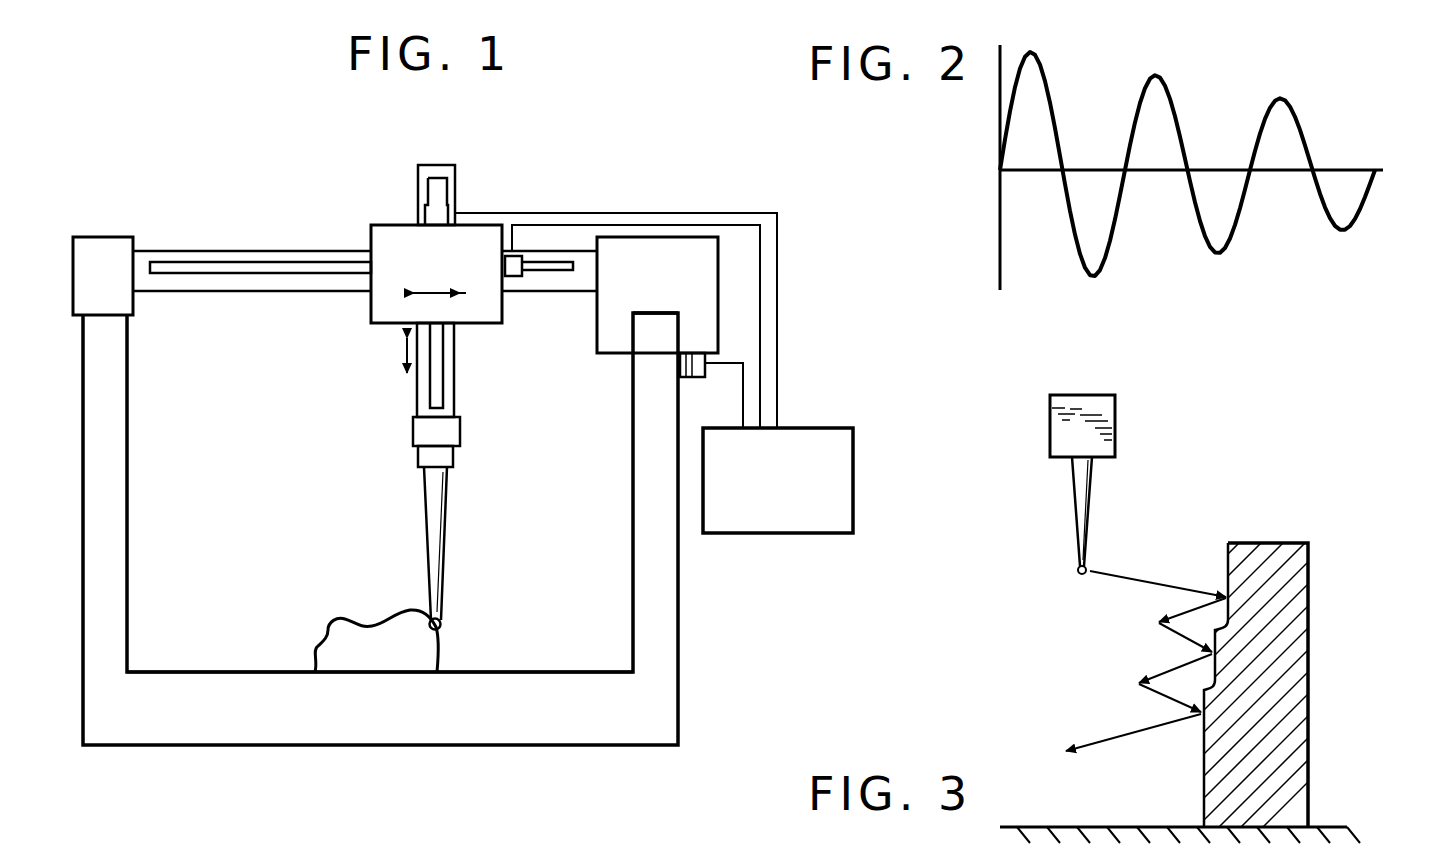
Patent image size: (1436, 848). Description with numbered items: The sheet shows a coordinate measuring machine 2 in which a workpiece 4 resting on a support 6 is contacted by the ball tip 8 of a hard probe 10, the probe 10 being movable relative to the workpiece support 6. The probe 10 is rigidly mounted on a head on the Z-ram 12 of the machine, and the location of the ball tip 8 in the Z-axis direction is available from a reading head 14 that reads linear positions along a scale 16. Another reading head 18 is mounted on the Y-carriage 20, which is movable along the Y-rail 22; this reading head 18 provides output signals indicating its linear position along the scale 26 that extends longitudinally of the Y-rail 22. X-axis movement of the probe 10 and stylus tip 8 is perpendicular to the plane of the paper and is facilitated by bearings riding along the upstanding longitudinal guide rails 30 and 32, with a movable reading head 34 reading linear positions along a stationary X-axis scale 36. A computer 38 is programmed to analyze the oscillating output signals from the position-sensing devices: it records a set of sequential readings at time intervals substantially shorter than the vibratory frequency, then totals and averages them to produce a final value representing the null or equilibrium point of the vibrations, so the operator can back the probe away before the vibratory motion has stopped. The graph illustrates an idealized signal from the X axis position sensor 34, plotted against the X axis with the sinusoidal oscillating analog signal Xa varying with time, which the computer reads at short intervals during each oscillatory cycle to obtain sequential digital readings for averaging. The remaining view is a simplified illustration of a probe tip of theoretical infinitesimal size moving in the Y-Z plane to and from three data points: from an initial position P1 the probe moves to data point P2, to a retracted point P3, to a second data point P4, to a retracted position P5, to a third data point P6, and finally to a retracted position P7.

In FIG. 1, the coordinate measuring machine 2 is at (298, 186).
In FIG. 1, the workpiece 4 is at (333, 630).
In FIG. 1, the support 6 is at (235, 672).
In FIG. 1, the ball tip 8 is at (445, 622).
In FIG. 1, the hard probe 10 is at (445, 553).
In FIG. 1, the Z-ram 12 is at (455, 407).
In FIG. 1, the reading head 14 is at (425, 215).
In FIG. 1, the scale 16 is at (432, 188).
In FIG. 1, the reading head 18 is at (514, 272).
In FIG. 1, the Y-carriage 20 is at (436, 274).
In FIG. 1, the Y-rail 22 is at (178, 283).
In FIG. 1, the scale 26 is at (255, 273).
In FIG. 1, the upstanding longitudinal guide rail 30 is at (113, 482).
In FIG. 1, the upstanding longitudinal guide rail 32 is at (650, 480).
In FIG. 1, the movable reading head 34 is at (700, 375).
In FIG. 1, the stationary X-axis scale 36 is at (677, 363).
In FIG. 1, the computer 38 is at (798, 426).
In FIG. 2, the X axis X is at (972, 133).
In FIG. 2, the oscillating analog signal Xa is at (1310, 150).
In FIG. 3, the initial position P1 is at (1077, 571).
In FIG. 3, the data point P2 is at (1228, 597).
In FIG. 3, the retracted point P3 is at (1155, 622).
In FIG. 3, the second data point P4 is at (1205, 652).
In FIG. 3, the retracted position P5 is at (1135, 684).
In FIG. 3, the third data point P6 is at (1200, 713).
In FIG. 3, the retracted position P7 is at (1063, 752).